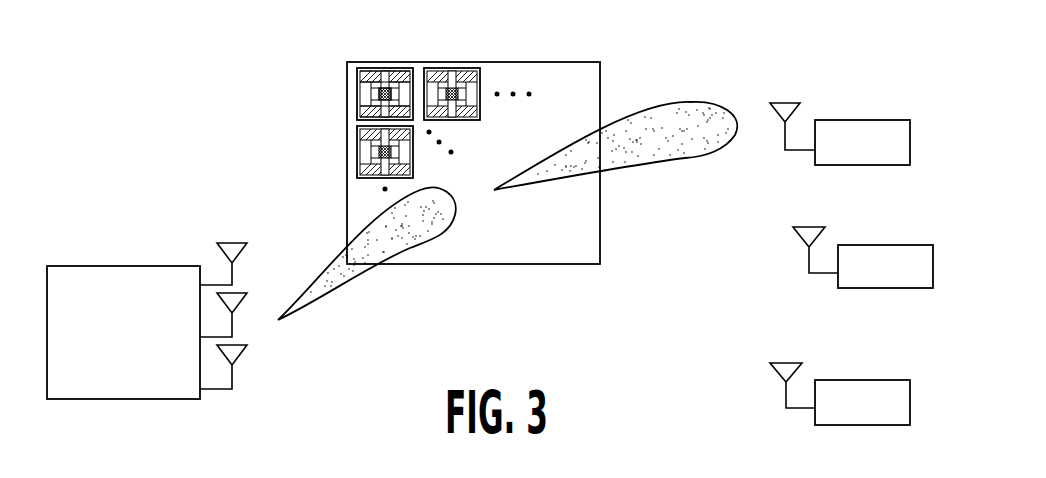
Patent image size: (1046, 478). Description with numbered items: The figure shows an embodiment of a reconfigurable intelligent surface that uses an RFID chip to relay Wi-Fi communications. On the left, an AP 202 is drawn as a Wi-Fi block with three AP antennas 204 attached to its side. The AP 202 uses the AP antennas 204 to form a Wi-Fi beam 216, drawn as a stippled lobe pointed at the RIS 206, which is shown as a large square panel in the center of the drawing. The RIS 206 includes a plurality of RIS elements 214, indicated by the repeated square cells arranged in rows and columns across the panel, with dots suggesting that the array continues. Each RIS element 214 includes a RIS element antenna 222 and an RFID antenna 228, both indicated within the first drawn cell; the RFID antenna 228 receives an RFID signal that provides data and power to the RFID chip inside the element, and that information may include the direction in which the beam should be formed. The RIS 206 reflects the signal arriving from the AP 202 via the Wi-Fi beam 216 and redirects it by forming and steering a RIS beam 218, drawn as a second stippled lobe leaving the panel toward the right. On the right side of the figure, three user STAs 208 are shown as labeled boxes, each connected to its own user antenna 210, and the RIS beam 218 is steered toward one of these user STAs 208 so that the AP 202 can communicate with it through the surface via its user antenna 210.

The AP 202 is at (117, 265).
The AP antennas 204 is at (268, 388).
The RIS 206 is at (540, 62).
The user STAs 208 is at (893, 120).
The user antenna 210 is at (788, 103).
The RIS elements 214 is at (357, 97).
The Wi-Fi beam 216 is at (373, 90).
The RIS beam 218 is at (645, 162).
The RIS element antenna 222 is at (357, 113).
The RFID antenna 228 is at (377, 72).